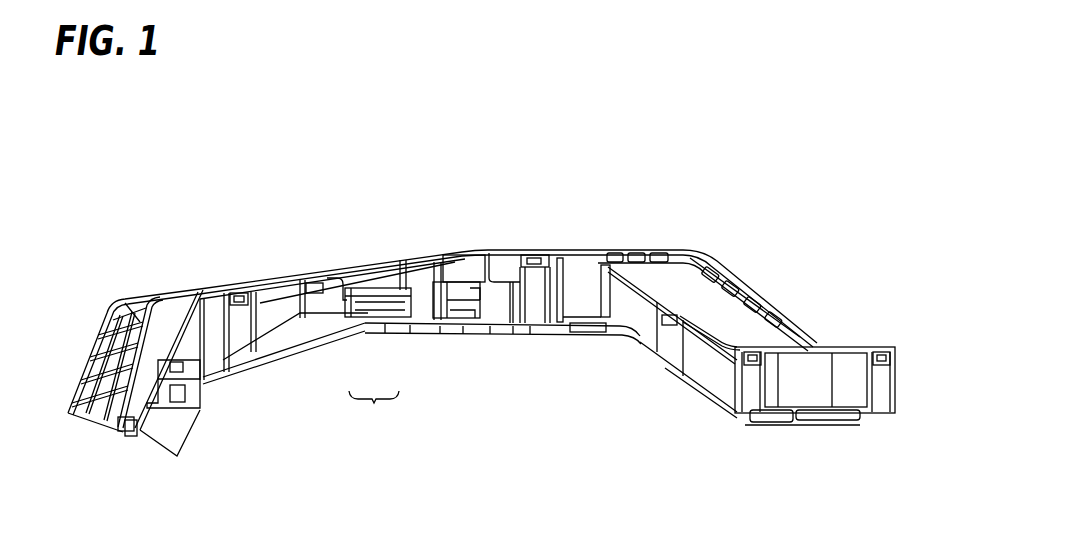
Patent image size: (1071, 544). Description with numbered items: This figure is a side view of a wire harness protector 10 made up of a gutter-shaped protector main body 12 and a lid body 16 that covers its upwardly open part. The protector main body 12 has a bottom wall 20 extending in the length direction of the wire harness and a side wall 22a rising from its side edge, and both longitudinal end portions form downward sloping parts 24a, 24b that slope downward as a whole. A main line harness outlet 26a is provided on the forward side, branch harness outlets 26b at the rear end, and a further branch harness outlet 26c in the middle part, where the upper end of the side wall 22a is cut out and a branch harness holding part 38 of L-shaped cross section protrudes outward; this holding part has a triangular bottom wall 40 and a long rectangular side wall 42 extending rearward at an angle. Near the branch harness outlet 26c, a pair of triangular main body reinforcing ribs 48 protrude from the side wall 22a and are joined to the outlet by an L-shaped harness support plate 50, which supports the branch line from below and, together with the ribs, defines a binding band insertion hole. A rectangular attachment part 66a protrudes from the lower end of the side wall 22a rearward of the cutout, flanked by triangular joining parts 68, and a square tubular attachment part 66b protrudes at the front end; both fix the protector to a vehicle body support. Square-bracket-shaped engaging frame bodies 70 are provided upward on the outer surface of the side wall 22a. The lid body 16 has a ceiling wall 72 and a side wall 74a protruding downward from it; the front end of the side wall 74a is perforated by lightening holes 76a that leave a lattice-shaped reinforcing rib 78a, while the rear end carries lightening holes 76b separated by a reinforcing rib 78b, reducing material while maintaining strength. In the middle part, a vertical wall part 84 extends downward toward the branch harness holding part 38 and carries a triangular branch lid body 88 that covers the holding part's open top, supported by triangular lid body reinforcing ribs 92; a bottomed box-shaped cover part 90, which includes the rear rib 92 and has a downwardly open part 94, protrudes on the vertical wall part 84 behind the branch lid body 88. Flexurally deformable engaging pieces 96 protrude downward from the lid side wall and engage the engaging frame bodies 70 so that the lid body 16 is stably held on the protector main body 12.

The wire harness protector 10 is at (520, 185).
The protector main body 12 is at (695, 412).
The lid body 16 is at (740, 238).
The bottom wall 20 is at (692, 380).
The side wall 22a is at (640, 324).
The downward sloping part 24a is at (200, 445).
The downward sloping part 24b is at (654, 374).
The main line harness outlet 26a is at (118, 470).
The branch harness outlet 26b is at (905, 388).
The branch harness outlet 26c is at (472, 310).
The branch harness holding part 38 is at (374, 405).
The bottom wall 40 is at (368, 318).
The side wall 42 is at (390, 308).
The main body reinforcing rib 48 is at (474, 292).
The harness support plate 50 is at (453, 317).
The attachment part 66a is at (583, 328).
The attachment part 66b is at (183, 382).
The joining part 68 is at (562, 287).
The engaging frame body 70 is at (235, 293).
The ceiling wall 72 is at (200, 297).
The side wall 74a is at (180, 295).
The lightening hole 76a is at (112, 335).
The lightening hole 76b is at (733, 283).
The reinforcing rib 78a is at (103, 358).
The reinforcing rib 78b is at (753, 297).
The vertical wall part 84 is at (377, 272).
The branch lid body 88 is at (387, 288).
The cover part 90 is at (462, 285).
The lid body reinforcing rib 92 is at (413, 280).
The downwardly open part 94 is at (460, 270).
The engaging piece 96 is at (138, 434).